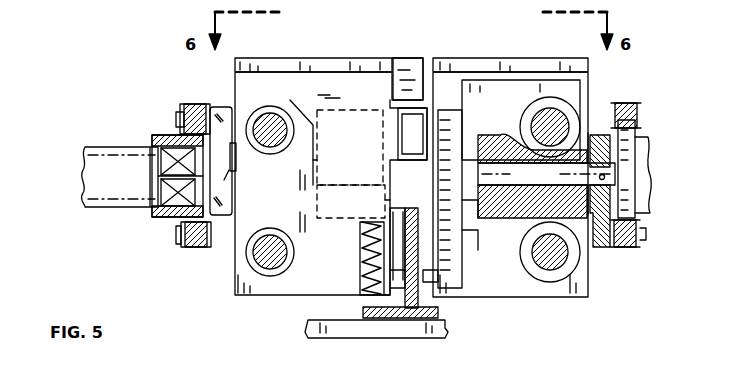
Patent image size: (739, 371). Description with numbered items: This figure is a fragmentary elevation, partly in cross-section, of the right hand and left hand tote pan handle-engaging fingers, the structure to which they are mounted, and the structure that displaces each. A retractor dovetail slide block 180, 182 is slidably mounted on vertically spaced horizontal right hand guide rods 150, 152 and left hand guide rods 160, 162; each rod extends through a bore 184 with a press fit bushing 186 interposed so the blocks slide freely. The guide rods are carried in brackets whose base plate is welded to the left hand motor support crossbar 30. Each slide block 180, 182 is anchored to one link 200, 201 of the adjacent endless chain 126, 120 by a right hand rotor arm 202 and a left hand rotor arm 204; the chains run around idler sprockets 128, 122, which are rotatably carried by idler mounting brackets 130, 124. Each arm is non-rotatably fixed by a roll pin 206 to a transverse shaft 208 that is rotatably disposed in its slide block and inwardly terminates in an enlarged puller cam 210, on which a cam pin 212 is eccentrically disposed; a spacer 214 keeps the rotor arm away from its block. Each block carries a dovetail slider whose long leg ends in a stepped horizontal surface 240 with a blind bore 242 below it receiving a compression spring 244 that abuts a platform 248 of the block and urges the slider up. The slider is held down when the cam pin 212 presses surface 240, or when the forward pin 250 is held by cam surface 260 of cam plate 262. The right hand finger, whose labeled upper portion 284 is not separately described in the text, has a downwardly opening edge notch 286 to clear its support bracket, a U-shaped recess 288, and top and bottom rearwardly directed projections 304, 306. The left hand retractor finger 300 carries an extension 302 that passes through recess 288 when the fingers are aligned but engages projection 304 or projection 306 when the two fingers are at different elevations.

The left hand motor support crossbar 30 is at (306, 325).
The endless chain 120 is at (637, 108).
The idler sprocket 122 is at (628, 147).
The idler mounting bracket 124 is at (642, 173).
The endless chain 126 is at (195, 104).
The idler sprocket 128 is at (178, 130).
The idler mounting bracket 130 is at (80, 196).
The right hand guide rod 150 is at (270, 117).
The right hand guide rod 152 is at (236, 268).
The left hand guide rod 160 is at (508, 127).
The left hand guide rod 162 is at (570, 255).
The retractor dovetail slide block 180 is at (328, 176).
The retractor dovetail slide block 182 is at (510, 177).
The bore 184 is at (236, 98).
The press fit bushing 186 is at (287, 150).
The link 200 is at (176, 116).
The link 201 is at (642, 233).
The right hand rotor arm 202 is at (207, 247).
The left hand rotor arm 204 is at (648, 203).
The roll pin 206 is at (270, 239).
The transverse shaft 208 is at (153, 197).
The puller cam 210 is at (467, 186).
The cam pin 212 is at (475, 225).
The spacer 214 is at (215, 262).
The stepped horizontal surface 240 is at (467, 248).
The blind bore 242 is at (362, 276).
The compression spring 244 is at (375, 293).
The platform 248 is at (380, 296).
The forward pin 250 is at (392, 290).
The cam surface 260 is at (399, 290).
The cam plate 262 is at (385, 201).
The top wall 284 is at (342, 58).
The downwardly opening edge notch 286 is at (306, 170).
The U-shaped recess 288 is at (420, 80).
The left hand retractor finger 300 is at (470, 60).
The extension 302 is at (415, 132).
The top rearwardly directed projection 304 is at (380, 186).
The bottom rearwardly directed projection 306 is at (405, 85).